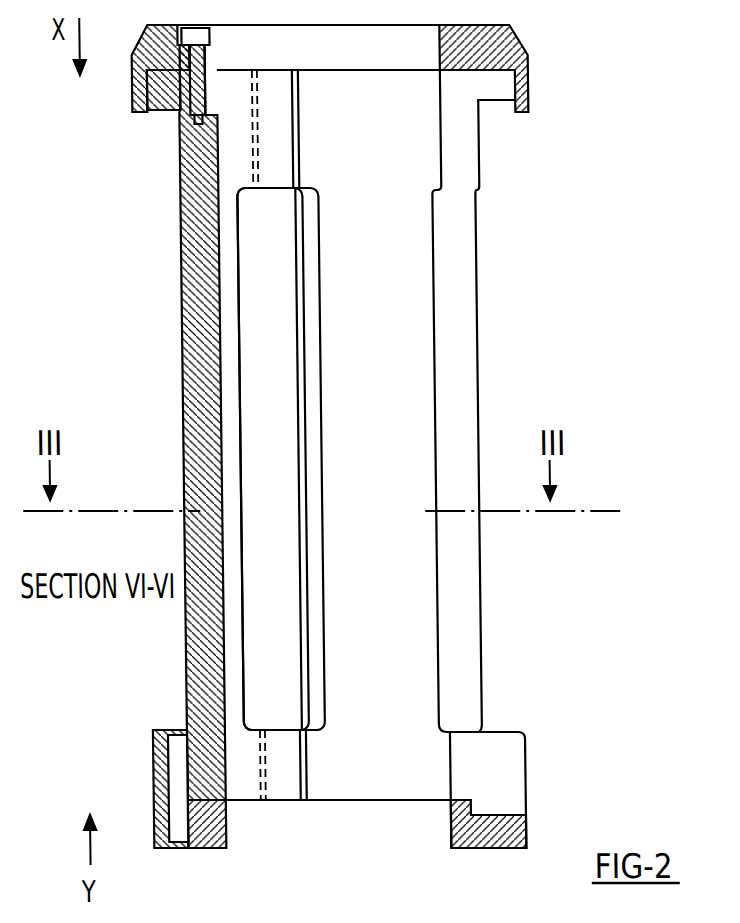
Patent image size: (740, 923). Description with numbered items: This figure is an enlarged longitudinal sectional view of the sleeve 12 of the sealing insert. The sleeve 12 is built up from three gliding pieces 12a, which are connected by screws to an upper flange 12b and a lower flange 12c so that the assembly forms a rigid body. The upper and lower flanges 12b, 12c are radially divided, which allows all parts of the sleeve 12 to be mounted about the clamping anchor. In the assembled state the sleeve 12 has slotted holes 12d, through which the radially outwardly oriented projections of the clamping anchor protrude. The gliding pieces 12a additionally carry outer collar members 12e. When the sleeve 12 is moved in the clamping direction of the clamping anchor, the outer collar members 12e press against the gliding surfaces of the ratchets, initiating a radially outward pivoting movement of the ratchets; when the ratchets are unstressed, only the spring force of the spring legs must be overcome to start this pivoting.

The sleeve 12 is at (196, 197).
The gliding piece 12a is at (523, 255).
The upper flange 12b is at (527, 60).
The lower flange 12c is at (495, 826).
The slotted hole 12d is at (266, 337).
The outer collar member 12e is at (149, 733).